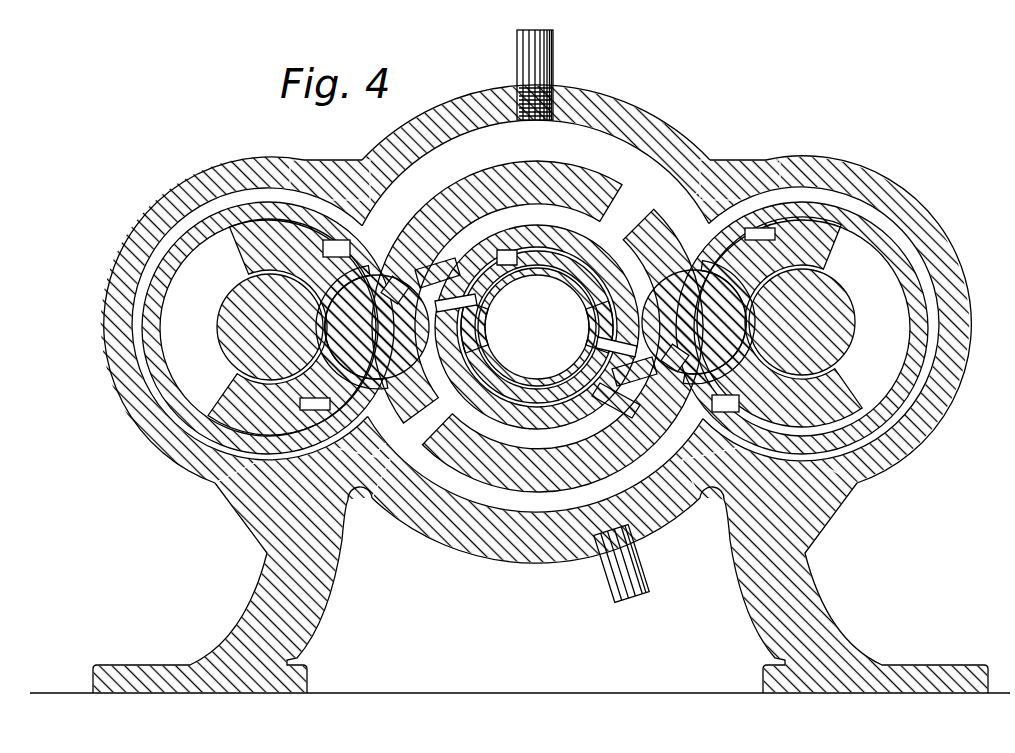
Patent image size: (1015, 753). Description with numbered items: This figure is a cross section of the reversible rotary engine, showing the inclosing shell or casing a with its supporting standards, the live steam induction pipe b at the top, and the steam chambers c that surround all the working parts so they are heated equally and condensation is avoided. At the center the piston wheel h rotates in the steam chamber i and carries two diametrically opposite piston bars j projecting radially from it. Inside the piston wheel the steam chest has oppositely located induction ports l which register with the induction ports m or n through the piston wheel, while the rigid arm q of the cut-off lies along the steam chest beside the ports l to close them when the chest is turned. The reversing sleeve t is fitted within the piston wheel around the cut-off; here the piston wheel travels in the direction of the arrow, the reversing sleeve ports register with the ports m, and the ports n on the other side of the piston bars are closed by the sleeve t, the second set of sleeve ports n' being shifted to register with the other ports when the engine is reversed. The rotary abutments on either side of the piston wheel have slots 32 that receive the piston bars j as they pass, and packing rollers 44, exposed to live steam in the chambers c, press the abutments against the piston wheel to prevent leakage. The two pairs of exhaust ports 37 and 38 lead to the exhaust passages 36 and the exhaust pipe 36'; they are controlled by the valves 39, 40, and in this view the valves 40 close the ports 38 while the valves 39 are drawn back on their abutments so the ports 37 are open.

The inclosing shell or casing a is at (507, 376).
The live steam induction pipe b is at (556, 68).
The steam chambers c is at (535, 316).
The piston wheel h is at (580, 258).
The steam chamber i is at (549, 213).
The piston bars j is at (619, 409).
The steam induction ports l is at (537, 327).
The steam induction ports m is at (536, 331).
The steam induction ports n is at (537, 339).
The ports of reversing sleeve n' is at (522, 349).
The arm q is at (492, 333).
The reversing sleeve t is at (537, 335).
The slots or openings 32 is at (535, 324).
The exhaust passages 36 is at (536, 328).
The exhaust pipe 36' is at (643, 564).
The exhaust ports 37 is at (352, 444).
The exhaust ports 38 is at (715, 445).
The exhaust port valves 39 is at (328, 402).
The exhaust port valves 40 is at (540, 329).
The packing rollers 44 is at (240, 338).